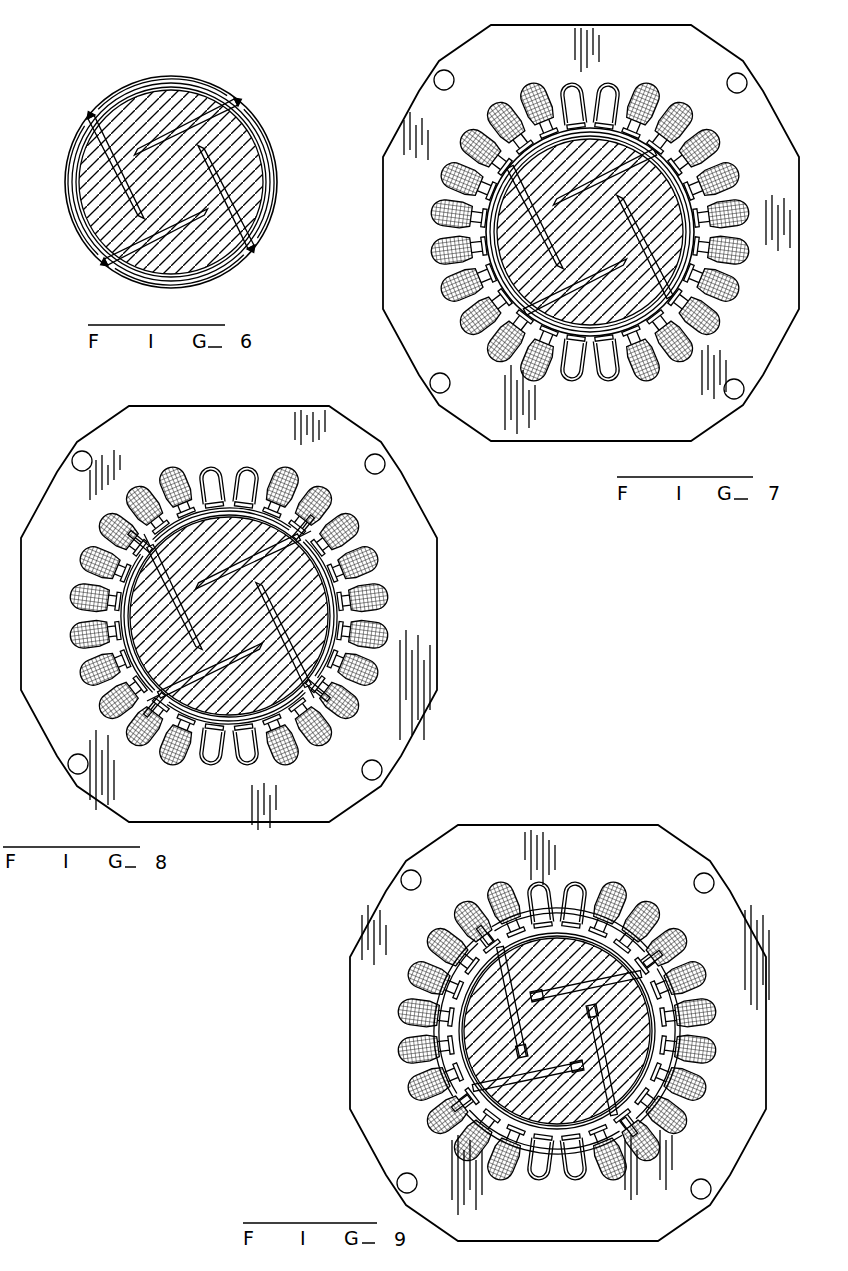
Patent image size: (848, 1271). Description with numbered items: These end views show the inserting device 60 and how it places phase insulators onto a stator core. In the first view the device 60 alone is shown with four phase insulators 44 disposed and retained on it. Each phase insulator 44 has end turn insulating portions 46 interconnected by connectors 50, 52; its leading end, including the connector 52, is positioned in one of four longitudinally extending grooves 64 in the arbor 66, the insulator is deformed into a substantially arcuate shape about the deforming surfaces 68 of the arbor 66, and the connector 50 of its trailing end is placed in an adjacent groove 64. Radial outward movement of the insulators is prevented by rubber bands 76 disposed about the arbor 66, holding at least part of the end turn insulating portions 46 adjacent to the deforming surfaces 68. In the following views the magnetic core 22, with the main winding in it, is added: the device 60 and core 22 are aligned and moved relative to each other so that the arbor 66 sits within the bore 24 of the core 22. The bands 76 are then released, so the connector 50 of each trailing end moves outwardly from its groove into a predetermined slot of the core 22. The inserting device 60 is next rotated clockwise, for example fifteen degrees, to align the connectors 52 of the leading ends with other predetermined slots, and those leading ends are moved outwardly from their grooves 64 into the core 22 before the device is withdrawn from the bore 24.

In FIG. 7, the magnetic core 22 is at (712, 40).
In FIG. 8, the magnetic core 22 is at (358, 428).
In FIG. 9, the magnetic core 22 is at (672, 843).
In FIG. 7, the bore 24 is at (690, 172).
In FIG. 8, the bore 24 is at (358, 592).
In FIG. 9, the bore 24 is at (690, 1042).
In FIG. 6, the phase insulator 44 is at (128, 90).
In FIG. 8, the phase insulator 44 is at (234, 508).
In FIG. 9, the phase insulator 44 is at (580, 912).
In FIG. 6, the end turn insulating portion 46 is at (278, 188).
In FIG. 8, the connector 50 is at (300, 512).
In FIG. 9, the connector 50 is at (630, 922).
In FIG. 9, the connector 52 is at (612, 958).
In FIG. 6, the inserting device 60 is at (187, 60).
In FIG. 6, the grooves 64 is at (197, 120).
In FIG. 7, the grooves 64 is at (598, 182).
In FIG. 8, the grooves 64 is at (204, 588).
In FIG. 6, the arbor 66 is at (202, 95).
In FIG. 7, the arbor 66 is at (482, 234).
In FIG. 8, the arbor 66 is at (122, 648).
In FIG. 9, the arbor 66 is at (470, 1062).
In FIG. 6, the deforming surfaces 68 is at (186, 285).
In FIG. 8, the deforming surfaces 68 is at (257, 518).
In FIG. 6, the rubber bands 76 is at (274, 160).
In FIG. 7, the rubber bands 76 is at (700, 200).